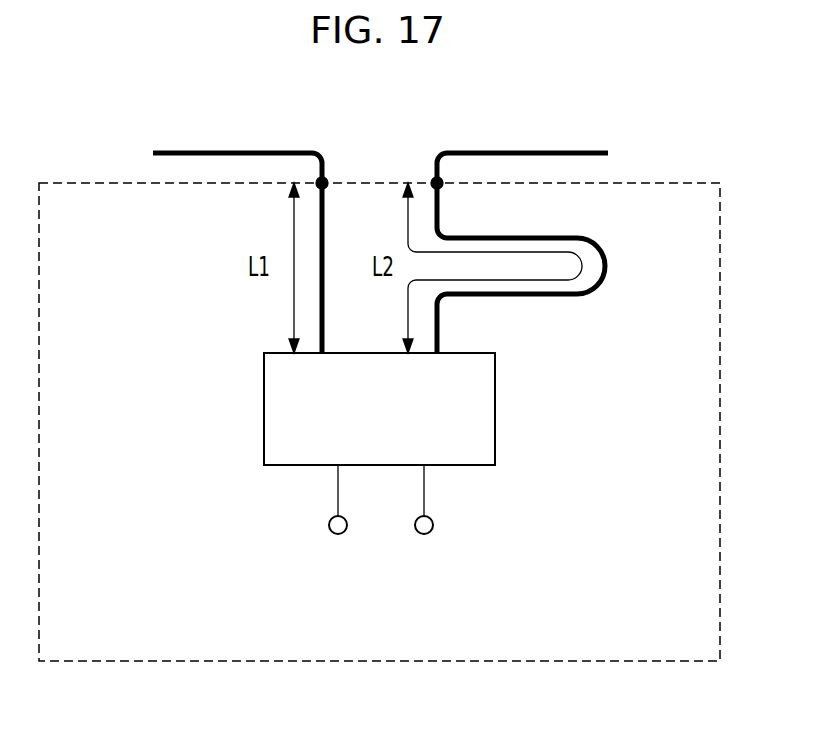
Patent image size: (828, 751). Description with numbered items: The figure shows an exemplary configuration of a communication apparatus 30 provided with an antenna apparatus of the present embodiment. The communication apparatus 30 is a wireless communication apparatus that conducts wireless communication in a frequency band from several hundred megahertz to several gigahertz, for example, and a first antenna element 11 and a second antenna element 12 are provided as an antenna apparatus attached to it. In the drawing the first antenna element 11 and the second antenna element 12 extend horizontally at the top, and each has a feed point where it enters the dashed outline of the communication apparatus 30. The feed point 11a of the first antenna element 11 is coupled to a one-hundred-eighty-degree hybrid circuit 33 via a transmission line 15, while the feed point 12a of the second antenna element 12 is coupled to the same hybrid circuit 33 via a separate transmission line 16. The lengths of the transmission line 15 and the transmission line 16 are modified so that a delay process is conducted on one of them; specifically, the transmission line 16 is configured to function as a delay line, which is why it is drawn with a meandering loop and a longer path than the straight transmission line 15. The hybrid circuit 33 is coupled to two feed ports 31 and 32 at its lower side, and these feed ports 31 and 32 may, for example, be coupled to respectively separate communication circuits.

The first antenna element 11 is at (245, 152).
The feed point 11a is at (327, 178).
The second antenna element 12 is at (533, 152).
The feed point 12a is at (443, 187).
The transmission line 15 is at (322, 310).
The transmission line 16 is at (537, 297).
The communication apparatus 30 is at (490, 661).
The feed port 31 is at (338, 534).
The feed port 32 is at (424, 534).
The 180° hybrid circuit 33 is at (496, 410).